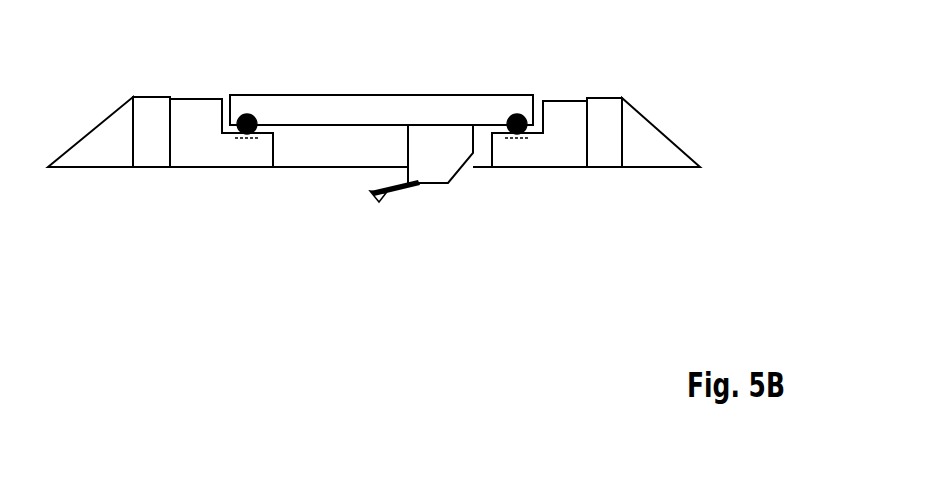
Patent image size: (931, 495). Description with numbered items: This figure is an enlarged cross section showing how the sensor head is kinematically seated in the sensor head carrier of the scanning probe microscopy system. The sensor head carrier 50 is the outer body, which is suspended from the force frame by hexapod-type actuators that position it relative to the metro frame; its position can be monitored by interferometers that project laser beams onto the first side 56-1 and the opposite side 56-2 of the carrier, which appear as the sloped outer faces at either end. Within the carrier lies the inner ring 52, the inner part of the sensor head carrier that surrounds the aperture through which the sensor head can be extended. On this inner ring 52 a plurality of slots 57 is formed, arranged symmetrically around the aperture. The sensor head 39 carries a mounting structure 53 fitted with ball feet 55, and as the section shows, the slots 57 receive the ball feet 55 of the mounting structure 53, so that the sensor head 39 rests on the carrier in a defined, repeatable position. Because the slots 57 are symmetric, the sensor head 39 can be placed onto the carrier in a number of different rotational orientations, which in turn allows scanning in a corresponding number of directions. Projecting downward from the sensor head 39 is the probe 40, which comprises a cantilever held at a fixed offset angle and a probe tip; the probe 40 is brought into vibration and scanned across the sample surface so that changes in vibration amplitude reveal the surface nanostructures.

The sensor head 39 is at (452, 183).
The probe 40 is at (402, 192).
The sensor head carrier 50 is at (122, 168).
The inner ring 52 is at (237, 168).
The mounting structure 53 is at (340, 94).
The ball feet 55 is at (257, 113).
The first side of the sensor head carrier 56-1 is at (88, 131).
The side of the sensor head carrier 56-2 is at (660, 127).
The slots 57 is at (248, 139).